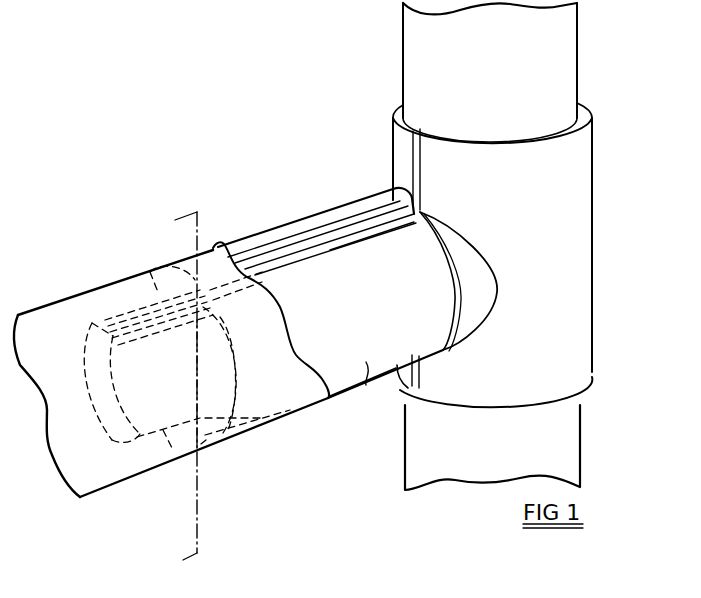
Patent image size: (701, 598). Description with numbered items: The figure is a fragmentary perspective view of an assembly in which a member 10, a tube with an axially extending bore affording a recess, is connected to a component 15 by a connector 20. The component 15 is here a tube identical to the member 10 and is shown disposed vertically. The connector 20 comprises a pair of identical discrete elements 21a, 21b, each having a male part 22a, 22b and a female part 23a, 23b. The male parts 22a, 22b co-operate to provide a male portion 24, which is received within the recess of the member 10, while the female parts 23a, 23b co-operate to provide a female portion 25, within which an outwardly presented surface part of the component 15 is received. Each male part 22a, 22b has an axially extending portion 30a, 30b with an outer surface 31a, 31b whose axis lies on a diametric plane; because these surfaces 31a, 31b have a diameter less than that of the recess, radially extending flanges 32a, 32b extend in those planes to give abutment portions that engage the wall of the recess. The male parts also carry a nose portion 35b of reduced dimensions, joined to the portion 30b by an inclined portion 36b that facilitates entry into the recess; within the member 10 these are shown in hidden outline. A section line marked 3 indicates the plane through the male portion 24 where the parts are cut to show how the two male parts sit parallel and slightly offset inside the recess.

The member 10 is at (45, 308).
The component 15 is at (577, 48).
The connector 20 is at (325, 138).
The element 21a is at (596, 139).
The element 21b is at (394, 90).
The male part 22a is at (396, 370).
The male part 22b is at (287, 233).
The female part 23a is at (588, 207).
The female part 23b is at (395, 130).
The male portion 24 is at (239, 184).
The female portion 25 is at (600, 337).
The axially extending portion 30a is at (343, 372).
The axially extending portion 30b is at (228, 247).
The outer surface 31a is at (400, 292).
The outer surface 31b is at (303, 230).
The flange 32a is at (373, 220).
The flange 32b is at (337, 227).
The nose portion 35b is at (108, 320).
The inclined portion 36b is at (281, 468).
The section line 3- 3 is at (178, 389).